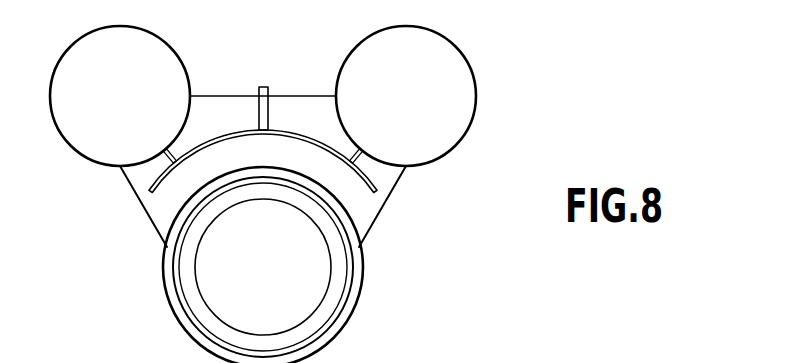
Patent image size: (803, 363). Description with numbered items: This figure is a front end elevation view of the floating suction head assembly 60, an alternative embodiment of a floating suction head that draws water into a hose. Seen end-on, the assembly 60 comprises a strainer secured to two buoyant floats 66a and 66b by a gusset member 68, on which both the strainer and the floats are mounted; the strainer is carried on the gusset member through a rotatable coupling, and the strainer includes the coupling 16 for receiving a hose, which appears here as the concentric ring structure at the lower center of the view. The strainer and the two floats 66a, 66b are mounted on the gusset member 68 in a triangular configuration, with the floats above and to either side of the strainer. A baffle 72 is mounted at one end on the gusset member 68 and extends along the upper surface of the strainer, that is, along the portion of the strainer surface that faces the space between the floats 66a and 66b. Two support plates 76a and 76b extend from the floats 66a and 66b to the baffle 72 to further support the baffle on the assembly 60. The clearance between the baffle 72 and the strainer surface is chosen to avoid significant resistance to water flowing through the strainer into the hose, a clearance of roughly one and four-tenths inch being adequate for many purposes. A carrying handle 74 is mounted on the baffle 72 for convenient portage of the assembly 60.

The coupling 16 is at (346, 311).
The floating suction head assembly 60 is at (150, 311).
The buoyant float 66a is at (92, 98).
The buoyant float 66b is at (387, 102).
The gusset member 68 is at (214, 107).
The baffle 72 is at (363, 193).
The carrying handle 74 is at (270, 108).
The support plate 76a is at (170, 163).
The support plate 76b is at (358, 158).